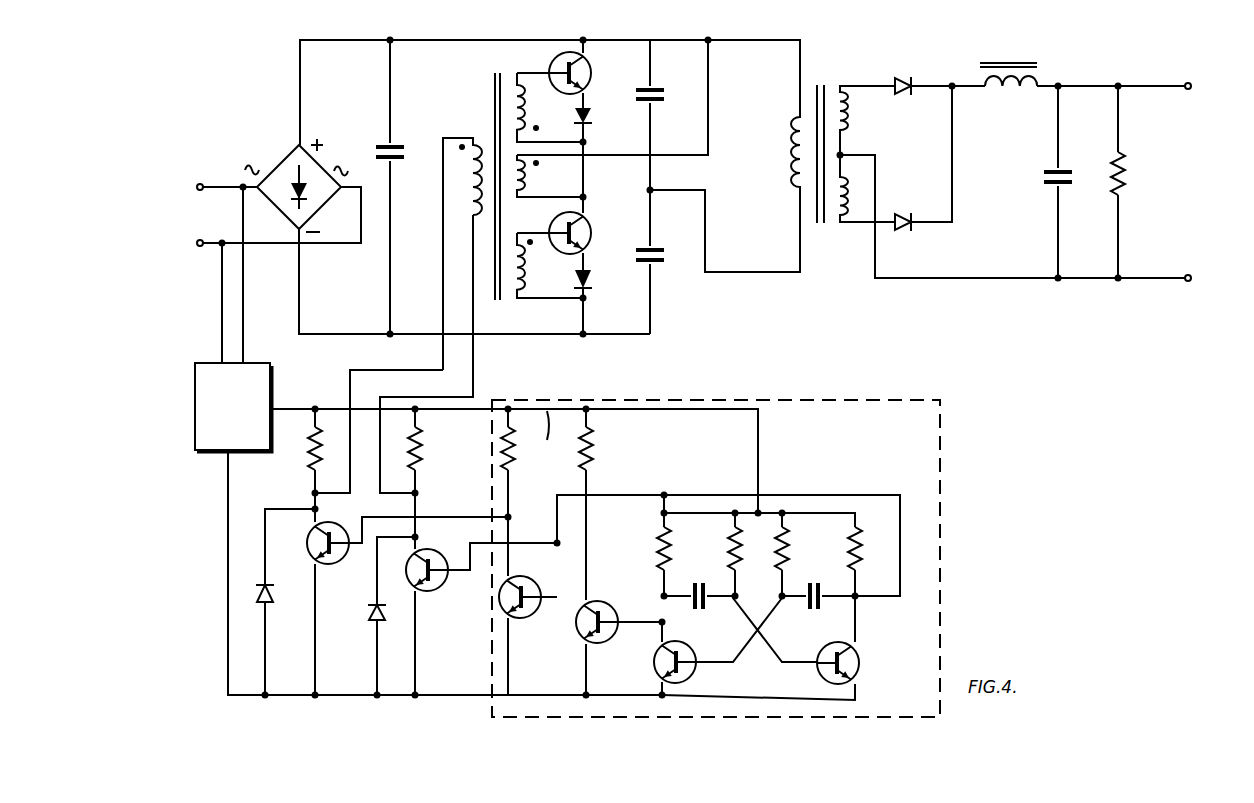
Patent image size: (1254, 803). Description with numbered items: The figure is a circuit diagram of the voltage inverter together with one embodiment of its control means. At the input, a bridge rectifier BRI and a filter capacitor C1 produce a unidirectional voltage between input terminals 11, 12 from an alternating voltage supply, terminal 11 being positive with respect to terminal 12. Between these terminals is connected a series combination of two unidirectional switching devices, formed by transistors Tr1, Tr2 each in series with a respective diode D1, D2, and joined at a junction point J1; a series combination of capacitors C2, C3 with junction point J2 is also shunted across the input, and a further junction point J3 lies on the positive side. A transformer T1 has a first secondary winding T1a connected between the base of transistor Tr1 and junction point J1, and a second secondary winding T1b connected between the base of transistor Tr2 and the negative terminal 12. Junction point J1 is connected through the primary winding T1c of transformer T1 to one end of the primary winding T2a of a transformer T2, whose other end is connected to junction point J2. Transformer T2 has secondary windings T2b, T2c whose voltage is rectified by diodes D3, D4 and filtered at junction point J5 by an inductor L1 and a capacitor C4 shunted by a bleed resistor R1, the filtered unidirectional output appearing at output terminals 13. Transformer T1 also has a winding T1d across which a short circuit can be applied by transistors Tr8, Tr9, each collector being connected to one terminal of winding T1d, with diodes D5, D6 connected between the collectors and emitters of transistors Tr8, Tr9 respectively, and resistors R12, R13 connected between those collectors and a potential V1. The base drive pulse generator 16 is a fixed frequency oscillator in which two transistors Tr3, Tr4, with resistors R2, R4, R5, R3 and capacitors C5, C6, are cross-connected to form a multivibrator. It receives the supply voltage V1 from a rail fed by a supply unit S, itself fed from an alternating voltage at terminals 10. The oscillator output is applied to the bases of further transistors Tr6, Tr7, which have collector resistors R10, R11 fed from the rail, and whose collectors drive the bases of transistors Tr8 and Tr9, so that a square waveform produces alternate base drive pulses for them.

The terminals 10 is at (197, 240).
The bridge rectifier BRI is at (282, 165).
The filter capacitor C1 is at (388, 145).
The input terminal 11 is at (444, 43).
The input terminal 12 is at (426, 333).
The transformer T1 is at (494, 86).
The first secondary winding T1a is at (513, 105).
The second secondary winding T1b is at (526, 290).
The primary winding T1c is at (526, 190).
The winding T1d is at (466, 170).
The transistor Tr1 is at (592, 68).
The transistor Tr2 is at (591, 228).
The diode D1 is at (590, 116).
The diode D2 is at (590, 287).
The junction point J1 is at (585, 192).
The junction point J2 is at (652, 192).
The junction point J3 is at (707, 42).
The capacitor C2 is at (659, 98).
The capacitor C3 is at (660, 258).
The transformer T2 is at (822, 84).
The primary winding T2a is at (790, 150).
The secondary winding T2b is at (852, 112).
The secondary winding T2c is at (848, 222).
The diode D3 is at (905, 72).
The diode D4 is at (904, 229).
The junction point J5 is at (956, 85).
The inductor L1 is at (1005, 92).
The capacitor C4 is at (1043, 176).
The bleed resistor R1 is at (1126, 165).
The output terminals 13 is at (1191, 89).
The supply unit S is at (233, 407).
The resistor R13 is at (312, 452).
The resistor R12 is at (424, 448).
The collector resistor R11 is at (505, 466).
The supply voltage V1 is at (540, 440).
The collector resistor R10 is at (592, 448).
The base drive pulse generator 16 is at (893, 400).
The transistor Tr9 is at (343, 558).
The transistor Tr8 is at (442, 585).
The transistor Tr7 is at (534, 612).
The transistor Tr6 is at (609, 641).
The diode D6 is at (270, 590).
The diode D5 is at (369, 613).
The resistor R2 is at (657, 549).
The resistor R4 is at (728, 549).
The resistor R5 is at (788, 549).
The resistor R3 is at (860, 541).
The capacitor C5 is at (701, 565).
The capacitor C6 is at (817, 582).
The transistor Tr3 is at (690, 672).
The transistor Tr4 is at (856, 675).